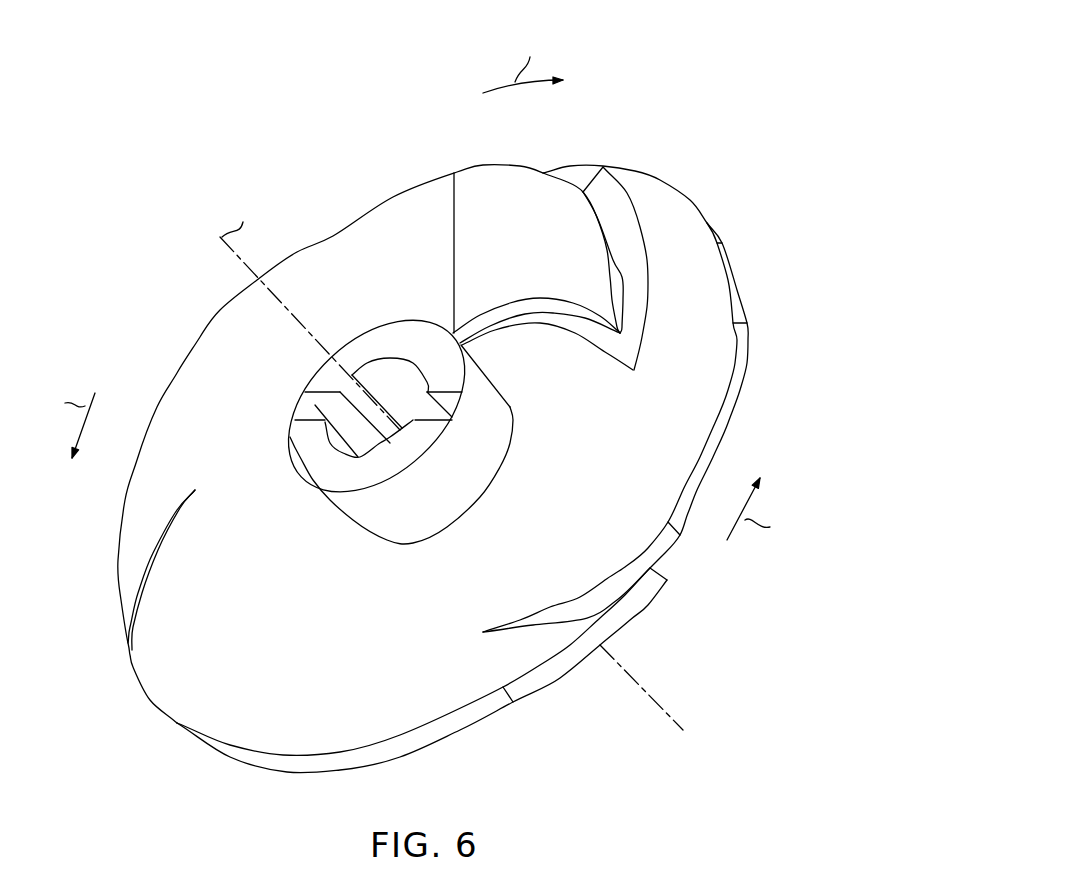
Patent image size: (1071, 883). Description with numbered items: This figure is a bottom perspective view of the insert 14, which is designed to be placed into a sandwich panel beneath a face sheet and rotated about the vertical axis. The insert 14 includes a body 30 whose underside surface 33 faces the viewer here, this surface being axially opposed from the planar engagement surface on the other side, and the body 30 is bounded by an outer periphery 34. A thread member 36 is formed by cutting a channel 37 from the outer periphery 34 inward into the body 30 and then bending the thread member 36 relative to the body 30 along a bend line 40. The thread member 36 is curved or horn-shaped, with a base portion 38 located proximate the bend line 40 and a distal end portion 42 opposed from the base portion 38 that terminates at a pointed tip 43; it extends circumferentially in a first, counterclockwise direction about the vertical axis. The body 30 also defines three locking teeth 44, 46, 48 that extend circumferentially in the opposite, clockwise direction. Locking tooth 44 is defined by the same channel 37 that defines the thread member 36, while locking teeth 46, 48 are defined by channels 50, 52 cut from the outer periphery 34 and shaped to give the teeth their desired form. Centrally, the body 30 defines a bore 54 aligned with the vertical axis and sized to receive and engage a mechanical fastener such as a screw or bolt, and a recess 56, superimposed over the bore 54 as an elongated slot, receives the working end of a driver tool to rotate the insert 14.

The insert 14 is at (682, 88).
The body 30 is at (716, 372).
The underside surface 33 is at (595, 494).
The outer periphery 34 is at (728, 417).
The thread member 36 is at (522, 229).
The channel 37 is at (622, 370).
The base portion 38 is at (428, 138).
The bend line 40 is at (454, 250).
The distal end portion 42 is at (610, 277).
The pointed tip 43 is at (615, 307).
The locking tooth 44 is at (668, 205).
The locking tooth 46 is at (620, 617).
The locking tooth 48 is at (130, 538).
The channel 50 is at (573, 605).
The channel 52 is at (152, 566).
The bore 54 is at (382, 366).
The recess 56 is at (314, 400).